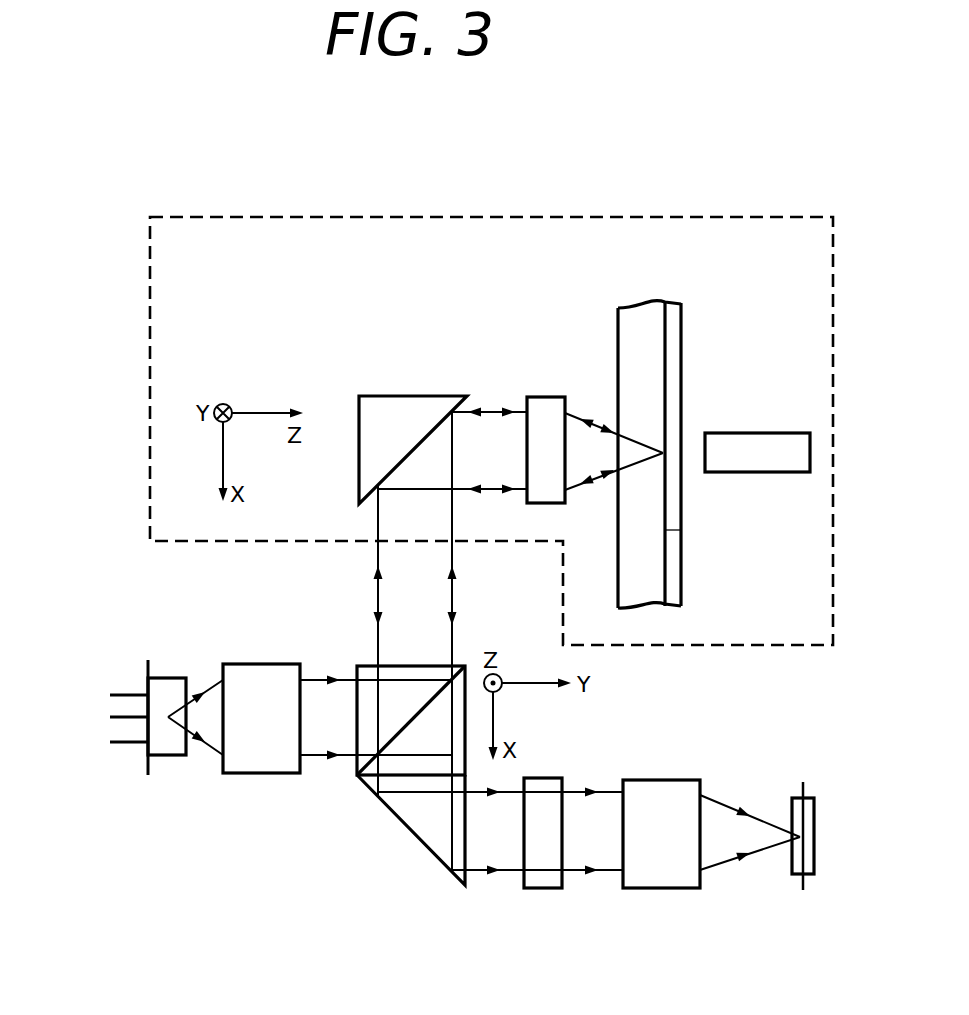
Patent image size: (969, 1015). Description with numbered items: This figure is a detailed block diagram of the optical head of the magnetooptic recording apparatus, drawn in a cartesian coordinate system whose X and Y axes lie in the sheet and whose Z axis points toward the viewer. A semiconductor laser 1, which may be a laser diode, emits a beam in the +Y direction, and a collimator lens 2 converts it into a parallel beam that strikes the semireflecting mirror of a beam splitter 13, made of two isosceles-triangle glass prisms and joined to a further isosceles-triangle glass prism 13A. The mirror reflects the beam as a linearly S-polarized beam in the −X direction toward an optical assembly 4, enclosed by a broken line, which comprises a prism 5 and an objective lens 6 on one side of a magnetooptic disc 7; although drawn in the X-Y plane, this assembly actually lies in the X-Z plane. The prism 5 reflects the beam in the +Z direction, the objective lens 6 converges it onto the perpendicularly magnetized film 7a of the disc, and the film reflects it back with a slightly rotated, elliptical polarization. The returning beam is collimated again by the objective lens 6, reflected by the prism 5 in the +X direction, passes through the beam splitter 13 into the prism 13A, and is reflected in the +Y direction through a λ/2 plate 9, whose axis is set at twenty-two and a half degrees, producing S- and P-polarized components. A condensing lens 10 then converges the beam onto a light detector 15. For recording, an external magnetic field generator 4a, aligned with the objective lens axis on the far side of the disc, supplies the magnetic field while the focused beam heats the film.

The semiconductor laser 1 is at (148, 678).
The collimator lens 2 is at (262, 664).
The optical assembly 4 is at (150, 268).
The external magnetic field generator 4a is at (755, 433).
The prism 5 is at (408, 396).
The objective lens 6 is at (553, 397).
The magnetooptic disc 7 is at (681, 348).
The perpendicularly magnetized film 7a is at (681, 530).
The λ/2 plate 9 is at (540, 889).
The condensing lens 10 is at (655, 889).
The beam splitter 13 is at (410, 666).
The prism 13A is at (386, 820).
The light detector 15 is at (815, 833).